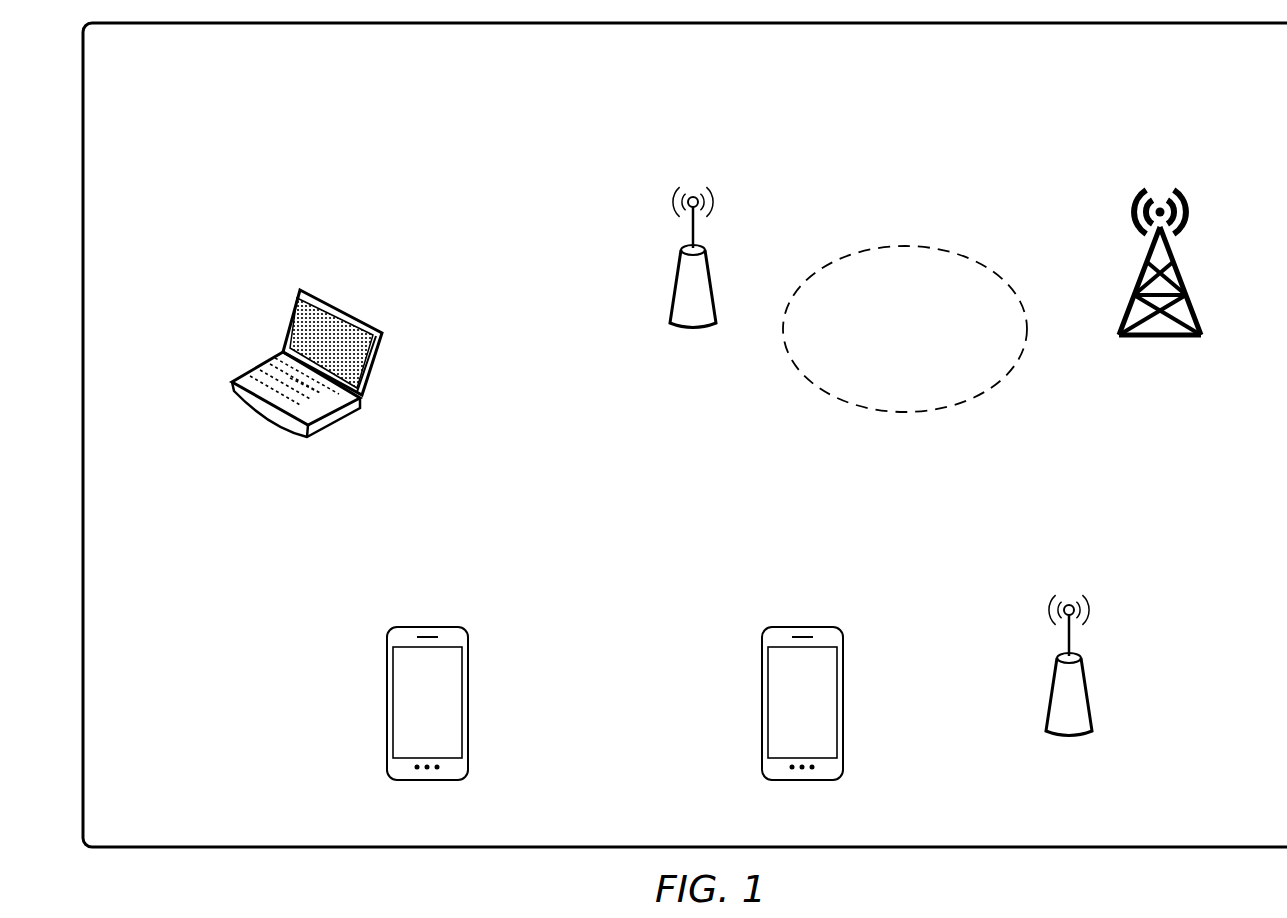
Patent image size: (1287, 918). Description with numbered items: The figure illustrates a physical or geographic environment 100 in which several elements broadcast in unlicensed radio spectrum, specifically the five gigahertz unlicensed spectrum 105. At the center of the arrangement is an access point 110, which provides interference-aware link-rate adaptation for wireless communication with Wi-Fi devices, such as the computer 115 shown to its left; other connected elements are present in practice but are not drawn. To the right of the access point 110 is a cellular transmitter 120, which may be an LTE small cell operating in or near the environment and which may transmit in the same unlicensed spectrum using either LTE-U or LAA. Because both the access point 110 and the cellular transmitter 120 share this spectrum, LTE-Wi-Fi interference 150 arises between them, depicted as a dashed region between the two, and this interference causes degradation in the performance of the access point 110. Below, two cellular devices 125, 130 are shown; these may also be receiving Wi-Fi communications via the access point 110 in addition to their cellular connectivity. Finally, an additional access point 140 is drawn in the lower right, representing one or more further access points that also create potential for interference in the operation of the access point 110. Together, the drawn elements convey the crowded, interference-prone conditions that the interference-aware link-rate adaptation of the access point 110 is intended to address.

The environment 100 is at (685, 435).
The 5 GHz unlicensed spectrum 105 is at (502, 135).
The access point 110 is at (710, 272).
The computer 115 is at (382, 338).
The cellular transmitter 120 is at (1132, 290).
The cellular device 125 is at (758, 633).
The cellular device 130 is at (383, 633).
The additional access point 140 is at (1087, 680).
The LTE-Wi-Fi interference 150 is at (905, 329).